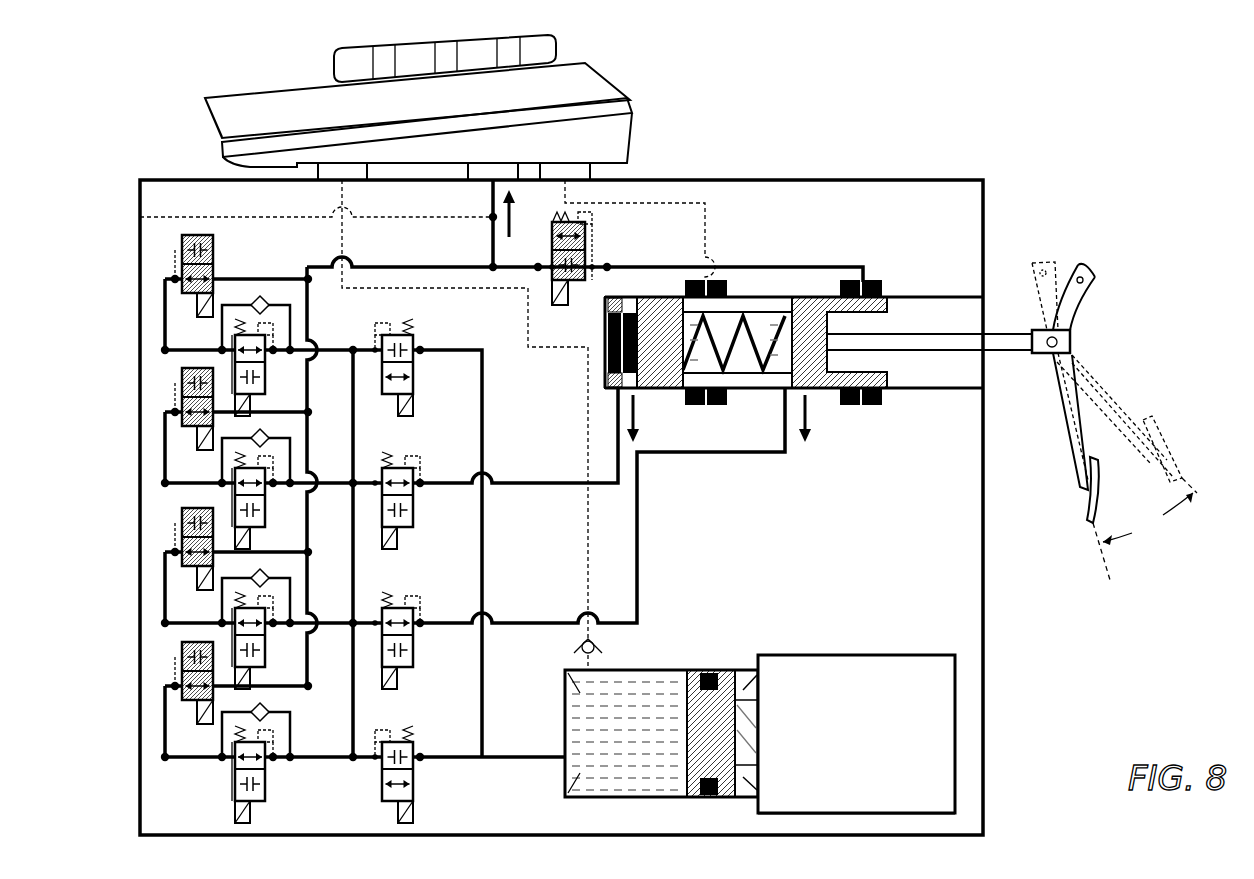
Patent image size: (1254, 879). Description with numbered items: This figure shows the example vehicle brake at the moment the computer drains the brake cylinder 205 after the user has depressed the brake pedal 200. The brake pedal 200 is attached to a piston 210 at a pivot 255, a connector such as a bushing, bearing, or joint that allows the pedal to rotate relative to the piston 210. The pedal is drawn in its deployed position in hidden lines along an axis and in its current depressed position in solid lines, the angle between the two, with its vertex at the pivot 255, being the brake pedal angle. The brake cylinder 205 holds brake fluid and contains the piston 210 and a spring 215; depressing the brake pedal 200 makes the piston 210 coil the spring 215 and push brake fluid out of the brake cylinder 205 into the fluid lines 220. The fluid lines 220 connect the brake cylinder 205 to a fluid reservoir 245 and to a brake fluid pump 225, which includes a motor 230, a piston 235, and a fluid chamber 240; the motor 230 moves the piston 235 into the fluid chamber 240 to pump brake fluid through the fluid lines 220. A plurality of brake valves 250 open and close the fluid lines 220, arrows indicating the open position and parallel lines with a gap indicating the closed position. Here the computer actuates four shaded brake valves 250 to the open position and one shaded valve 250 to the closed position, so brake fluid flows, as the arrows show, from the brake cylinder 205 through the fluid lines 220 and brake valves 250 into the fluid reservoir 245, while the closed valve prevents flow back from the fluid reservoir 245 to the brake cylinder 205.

The brake pedal 200 is at (1085, 512).
The brake cylinder 205 is at (917, 390).
The piston 210 is at (663, 308).
The spring 215 is at (605, 360).
The fluid lines 220 is at (398, 265).
The brake fluid pump 225 is at (855, 813).
The motor 230 is at (942, 692).
The piston 235 is at (700, 763).
The fluid chamber 240 is at (610, 778).
The fluid reservoir 245 is at (255, 100).
The brake valves 250 is at (185, 302).
The pivot 255 is at (1072, 340).